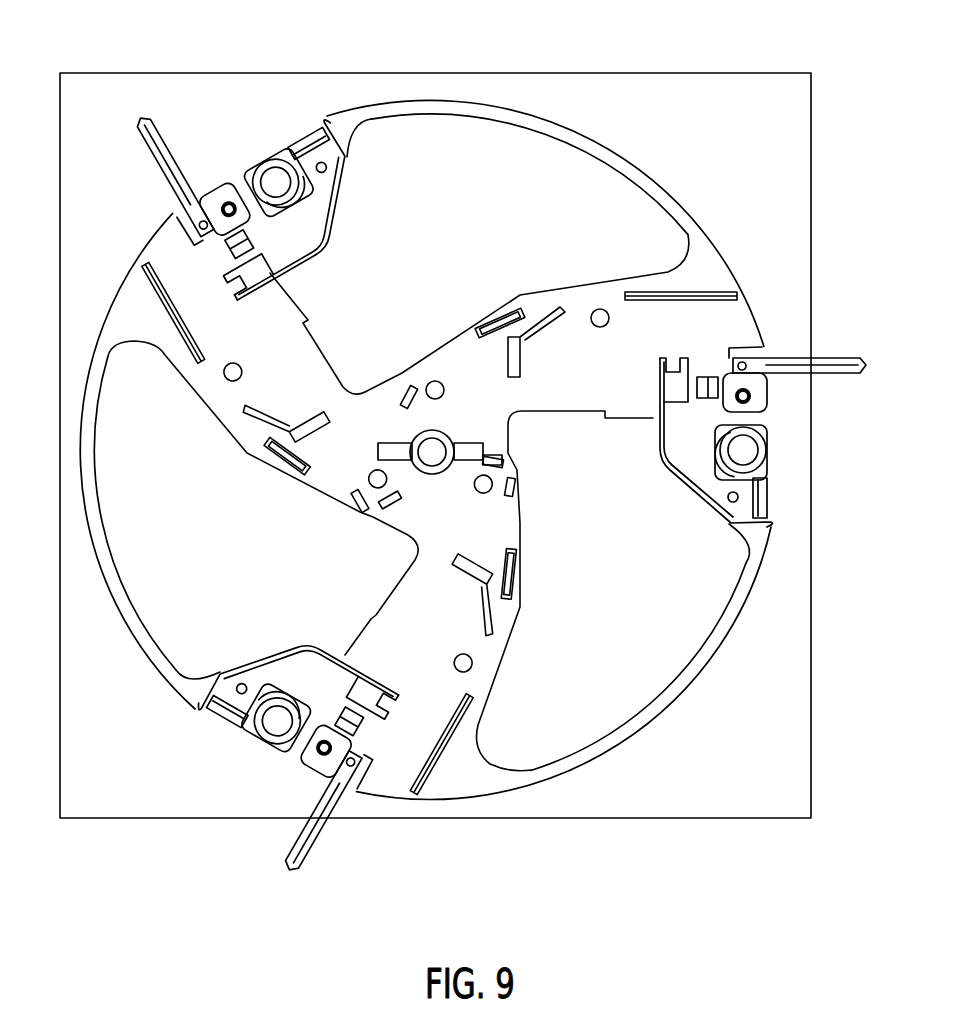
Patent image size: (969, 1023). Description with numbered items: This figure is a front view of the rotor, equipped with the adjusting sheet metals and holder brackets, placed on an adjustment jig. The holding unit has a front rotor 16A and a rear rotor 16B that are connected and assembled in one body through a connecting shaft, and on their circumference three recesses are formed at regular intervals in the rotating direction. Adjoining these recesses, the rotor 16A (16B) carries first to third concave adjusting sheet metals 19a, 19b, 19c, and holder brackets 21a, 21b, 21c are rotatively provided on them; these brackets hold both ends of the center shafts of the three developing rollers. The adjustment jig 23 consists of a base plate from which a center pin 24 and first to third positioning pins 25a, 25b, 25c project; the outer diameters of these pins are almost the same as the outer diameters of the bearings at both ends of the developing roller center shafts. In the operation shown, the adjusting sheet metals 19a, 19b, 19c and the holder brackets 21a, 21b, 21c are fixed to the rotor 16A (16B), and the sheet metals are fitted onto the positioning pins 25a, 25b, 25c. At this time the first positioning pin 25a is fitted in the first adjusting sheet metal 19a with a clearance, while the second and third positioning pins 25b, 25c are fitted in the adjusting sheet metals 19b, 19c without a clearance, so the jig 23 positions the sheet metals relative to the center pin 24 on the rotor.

The rotor 16A is at (425, 410).
The rotor 16B is at (530, 115).
The first adjusting sheet metal 19a is at (767, 503).
The second adjusting sheet metal 19b is at (302, 135).
The third adjusting sheet metal 19c is at (210, 712).
The holder bracket 21a is at (830, 357).
The holder bracket 21b is at (205, 168).
The holder bracket 21c is at (310, 833).
The adjustment jig 23 is at (706, 92).
The center pin 24 is at (448, 437).
The first positioning pin 25a is at (767, 437).
The second positioning pin 25b is at (268, 161).
The third positioning pin 25c is at (257, 737).